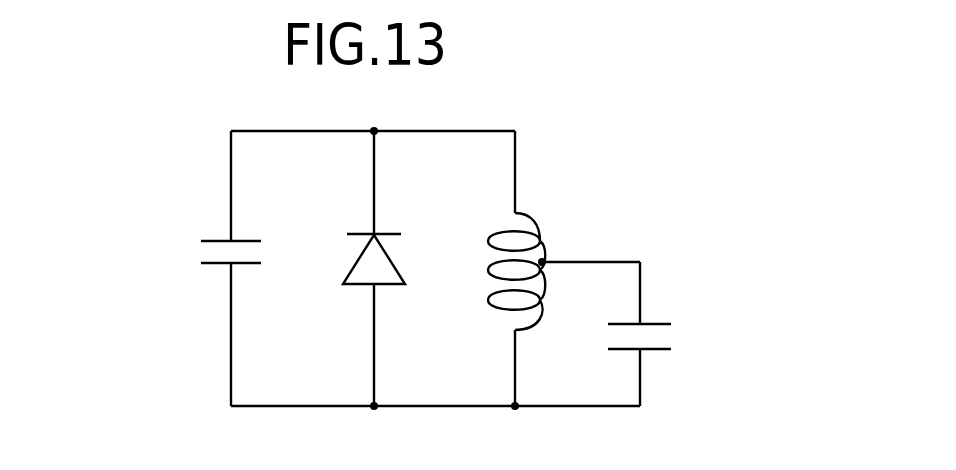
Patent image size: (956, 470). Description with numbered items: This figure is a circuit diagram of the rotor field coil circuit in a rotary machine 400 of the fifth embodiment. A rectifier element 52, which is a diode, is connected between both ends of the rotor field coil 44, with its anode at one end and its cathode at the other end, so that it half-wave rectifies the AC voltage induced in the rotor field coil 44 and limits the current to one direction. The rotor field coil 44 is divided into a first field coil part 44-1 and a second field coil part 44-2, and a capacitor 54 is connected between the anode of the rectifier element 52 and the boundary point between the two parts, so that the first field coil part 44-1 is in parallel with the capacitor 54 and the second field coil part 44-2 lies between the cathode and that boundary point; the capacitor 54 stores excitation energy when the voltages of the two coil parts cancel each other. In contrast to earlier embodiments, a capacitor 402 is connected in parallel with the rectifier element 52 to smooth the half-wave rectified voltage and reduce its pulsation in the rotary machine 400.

The rotary machine 400 is at (207, 212).
The capacitor 402 is at (210, 265).
The rectifier element 52 is at (354, 285).
The rotor field coil 44 is at (723, 115).
The first field coil part 44-1 is at (540, 295).
The second field coil part 44-2 is at (535, 215).
The capacitor 54 is at (662, 323).